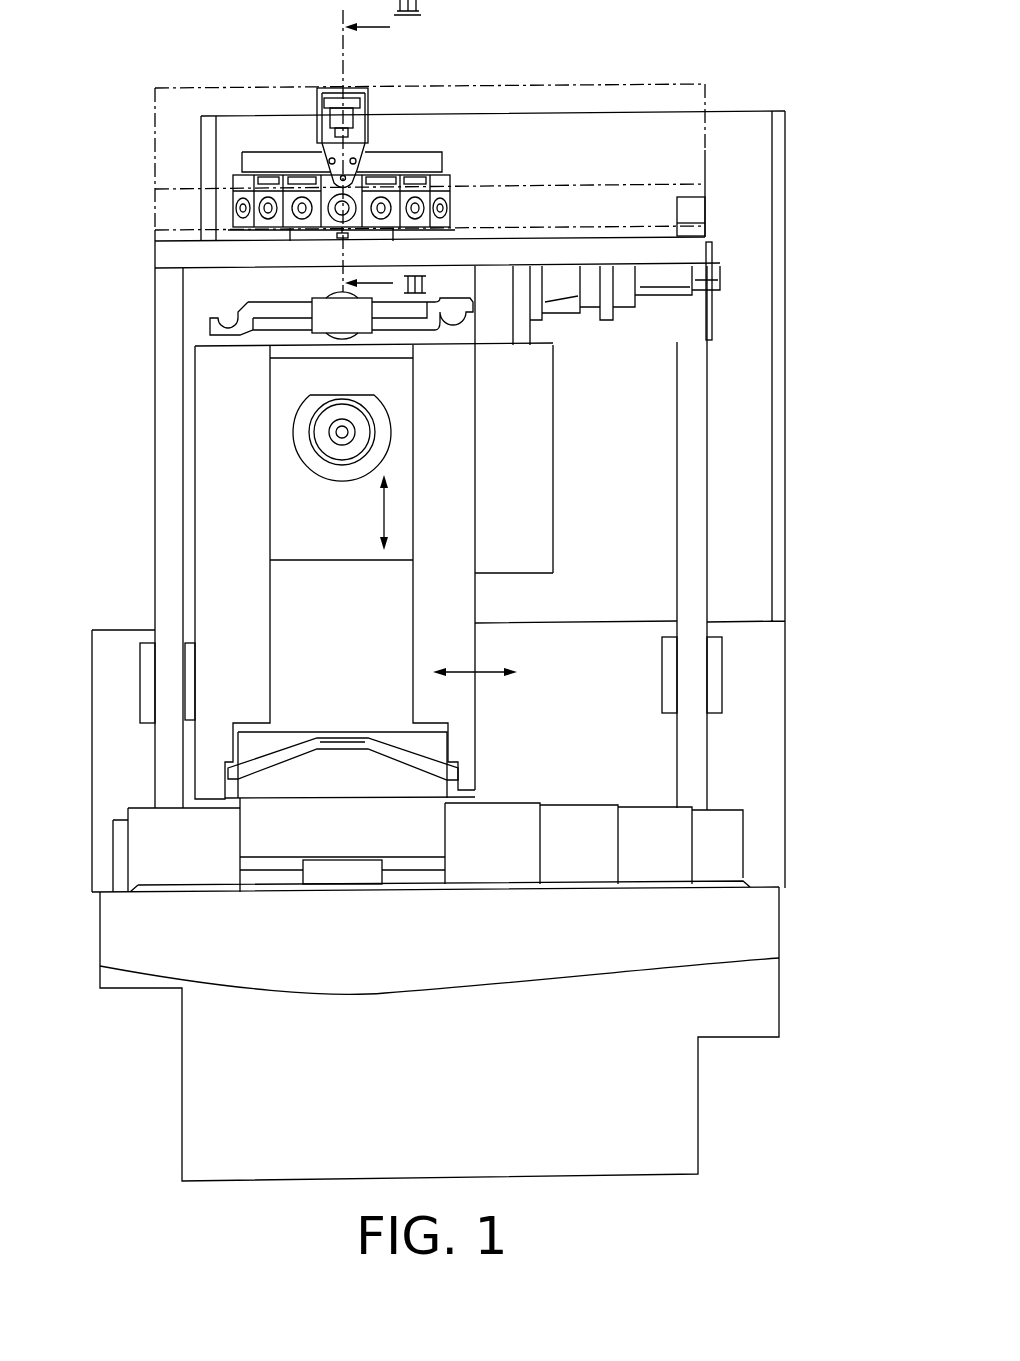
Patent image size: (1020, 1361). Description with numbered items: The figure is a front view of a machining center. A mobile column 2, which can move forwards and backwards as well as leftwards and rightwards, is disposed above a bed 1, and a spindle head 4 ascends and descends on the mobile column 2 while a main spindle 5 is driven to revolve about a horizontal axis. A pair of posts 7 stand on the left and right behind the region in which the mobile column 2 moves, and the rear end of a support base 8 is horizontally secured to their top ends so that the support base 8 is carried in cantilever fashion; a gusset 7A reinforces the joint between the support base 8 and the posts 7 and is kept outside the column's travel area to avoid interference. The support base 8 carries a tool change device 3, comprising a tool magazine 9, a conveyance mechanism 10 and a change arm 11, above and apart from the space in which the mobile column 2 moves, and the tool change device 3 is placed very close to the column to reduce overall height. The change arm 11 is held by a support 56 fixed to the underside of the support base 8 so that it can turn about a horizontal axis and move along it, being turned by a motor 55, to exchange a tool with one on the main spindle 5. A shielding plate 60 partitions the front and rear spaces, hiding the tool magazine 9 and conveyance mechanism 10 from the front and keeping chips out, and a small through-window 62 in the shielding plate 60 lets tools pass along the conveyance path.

The bed 1 is at (196, 1088).
The mobile column 2 is at (212, 447).
The tool change device 3 is at (295, 135).
The spindle head 4 is at (372, 473).
The main spindle 5 is at (355, 432).
The posts 7 is at (163, 555).
The gusset 7A is at (712, 250).
The support base 8 is at (565, 245).
The tool magazine 9 is at (456, 189).
The conveyance mechanism 10 is at (366, 125).
The change arm 11 is at (281, 310).
The motor 55 is at (653, 303).
The support 56 is at (323, 278).
The shielding plate 60 is at (155, 202).
The through-window 62 is at (335, 210).